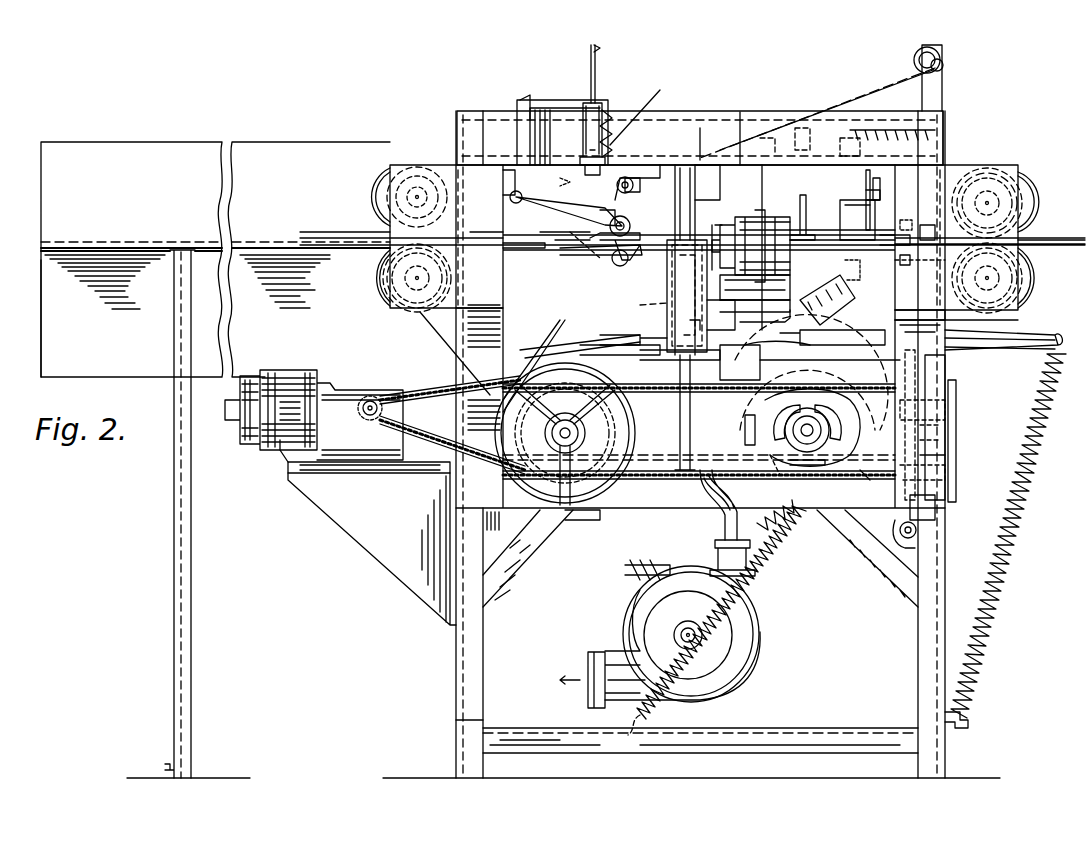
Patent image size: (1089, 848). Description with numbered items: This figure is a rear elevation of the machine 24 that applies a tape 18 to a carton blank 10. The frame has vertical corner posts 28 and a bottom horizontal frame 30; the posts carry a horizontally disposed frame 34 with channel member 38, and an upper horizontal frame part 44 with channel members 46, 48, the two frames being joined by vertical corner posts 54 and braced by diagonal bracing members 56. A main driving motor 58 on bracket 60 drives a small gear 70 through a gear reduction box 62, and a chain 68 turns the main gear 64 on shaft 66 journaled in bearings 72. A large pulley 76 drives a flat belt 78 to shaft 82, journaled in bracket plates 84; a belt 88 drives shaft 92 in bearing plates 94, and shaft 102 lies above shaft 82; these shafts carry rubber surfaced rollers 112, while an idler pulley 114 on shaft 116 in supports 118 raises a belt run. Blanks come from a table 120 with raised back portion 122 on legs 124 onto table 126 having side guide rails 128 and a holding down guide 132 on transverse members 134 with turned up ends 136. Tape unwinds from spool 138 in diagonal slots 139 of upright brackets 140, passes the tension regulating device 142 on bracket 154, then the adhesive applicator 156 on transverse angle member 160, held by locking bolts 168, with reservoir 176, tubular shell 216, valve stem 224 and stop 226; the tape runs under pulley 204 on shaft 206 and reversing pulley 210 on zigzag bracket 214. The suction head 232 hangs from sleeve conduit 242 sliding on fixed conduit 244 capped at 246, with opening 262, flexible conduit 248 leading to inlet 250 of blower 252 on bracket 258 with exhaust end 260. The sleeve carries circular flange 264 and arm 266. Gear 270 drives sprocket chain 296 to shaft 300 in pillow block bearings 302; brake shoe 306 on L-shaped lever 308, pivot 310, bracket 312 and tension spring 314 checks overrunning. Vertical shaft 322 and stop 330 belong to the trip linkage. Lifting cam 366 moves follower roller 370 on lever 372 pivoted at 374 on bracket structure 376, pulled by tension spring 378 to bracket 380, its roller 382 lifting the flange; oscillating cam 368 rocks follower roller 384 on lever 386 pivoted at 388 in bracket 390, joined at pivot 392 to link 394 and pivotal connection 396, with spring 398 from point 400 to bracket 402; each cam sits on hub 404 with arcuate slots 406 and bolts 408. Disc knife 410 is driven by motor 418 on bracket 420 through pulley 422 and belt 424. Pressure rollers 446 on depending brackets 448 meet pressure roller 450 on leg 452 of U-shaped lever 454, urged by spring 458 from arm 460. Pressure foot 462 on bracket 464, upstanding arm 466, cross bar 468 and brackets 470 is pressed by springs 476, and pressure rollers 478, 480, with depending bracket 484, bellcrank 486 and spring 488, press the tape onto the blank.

The carton blank 10 is at (1085, 240).
The tape 18 is at (845, 92).
The machine 24 is at (427, 701).
The corner posts 28 is at (470, 652).
The horizontal frame 30 is at (710, 760).
The horizontally disposed frame 34 is at (525, 528).
The channel member 38 is at (655, 522).
The upper horizontal frame part 44 is at (770, 112).
The channel member 46 is at (705, 125).
The channel member 48 is at (742, 110).
The vertical corner posts 54 is at (483, 330).
The diagonal bracing members 56 is at (498, 605).
The main driving motor 58 is at (280, 448).
The bracket 60 is at (405, 568).
The gear reduction box 62 is at (368, 385).
The main gear 64 is at (510, 410).
The shaft 66 is at (565, 422).
The chain 68 is at (440, 462).
The small gear 70 is at (380, 430).
The bearings 72 is at (557, 433).
The large pulley 76 is at (530, 362).
The flat belt 78 is at (420, 318).
The shaft 82 is at (385, 292).
The bracket plates 84 is at (380, 228).
The belt 88 is at (955, 305).
The shaft 92 is at (1018, 238).
The bearing plates 94 is at (940, 165).
The shaft 102 is at (390, 200).
The rollers 112 is at (390, 180).
The idler pulley 114 is at (500, 245).
The shaft 116 is at (510, 205).
The supports 118 is at (503, 190).
The table 120 is at (36, 316).
The raised back portion 122 is at (200, 211).
The legs 124 is at (191, 690).
The table 126 is at (605, 250).
The side guide rails 128 is at (535, 250).
The holding down guide 132 is at (520, 238).
The transverse members 134 is at (929, 223).
The turned up ends 136 is at (987, 203).
The spool 138 is at (912, 53).
The diagonal slots 139 is at (945, 60).
The upright brackets 140 is at (946, 110).
The tension regulating device 142 is at (845, 128).
The bracket 154 is at (920, 96).
The adhesive applicator 156 is at (570, 184).
The transverse angle member 160 is at (632, 170).
The locking bolts 168 is at (586, 158).
The reservoir 176 is at (590, 145).
The roller or pulley 204 is at (636, 192).
The shaft 206 is at (630, 180).
The direction reversing pulley 210 is at (575, 197).
The zigzag bracket 214 is at (605, 200).
The tubular shell 216 is at (600, 130).
The valve stem 224 is at (598, 52).
The stop 226 is at (600, 100).
The suction head 232 is at (667, 268).
The sleeve conduit 242 is at (675, 312).
The fixed conduit 244 is at (700, 192).
The cap 246 is at (693, 180).
The flexible conduit 248 is at (720, 535).
The inlet 250 is at (716, 575).
The blower 252 is at (760, 665).
The bracket 258 is at (636, 568).
The exhaust end 260 is at (588, 668).
The opening 262 is at (632, 306).
The circular flange 264 is at (680, 365).
The arm 266 is at (615, 355).
The gear 270 is at (640, 400).
The sprocket chain 296 is at (710, 378).
The shaft 300 is at (808, 432).
The pillow block bearings 302 is at (807, 467).
The brake shoe 306 is at (945, 470).
The L-shaped lever 308 is at (945, 428).
The pivot 310 is at (920, 440).
The bracket 312 is at (945, 455).
The tension spring 314 is at (909, 425).
The vertical shaft 322 is at (765, 178).
The stop 330 is at (808, 215).
The lifting cam 366 is at (880, 402).
The oscillating cam 368 is at (748, 356).
The follower roller 370 is at (835, 330).
The lever 372 is at (1035, 338).
The pivot 374 is at (965, 347).
The bracket structure 376 is at (920, 315).
The tension spring 378 is at (998, 600).
The bracket 380 is at (958, 725).
The roller 382 is at (730, 315).
The follower roller 384 is at (925, 417).
The lever 386 is at (828, 270).
The pivot 388 is at (920, 500).
The bracket 390 is at (920, 548).
The pivot 392 is at (830, 295).
The link 394 is at (766, 320).
The pivotal connection 396 is at (520, 360).
The tension spring 398 is at (770, 588).
The point 400 is at (885, 480).
The bracket 402 is at (625, 740).
The hub 404 is at (768, 478).
The arcuate slots 406 is at (745, 432).
The bolts 408 is at (815, 408).
The disc knife 410 is at (792, 286).
The motor 418 is at (770, 216).
The bracket 420 is at (792, 300).
The pulley 422 is at (718, 220).
The belt 424 is at (712, 232).
The pressure rollers 446 is at (632, 255).
The depending brackets 448 is at (595, 262).
The pressure roller 450 is at (630, 228).
The leg 452 is at (555, 243).
The U-shaped lever 454 is at (527, 92).
The spring 458 is at (655, 92).
The arm 460 is at (560, 100).
The pressure foot 462 is at (840, 246).
The bracket 464 is at (862, 215).
The upstanding arm 466 is at (882, 195).
The cross bar 468 is at (890, 246).
The brackets 470 is at (882, 180).
The springs 476 is at (848, 228).
The pressure roller 478 is at (895, 275).
The pressure roller 480 is at (917, 214).
The depending bracket 484 is at (900, 265).
The bellcrank 486 is at (840, 148).
The spring 488 is at (920, 142).